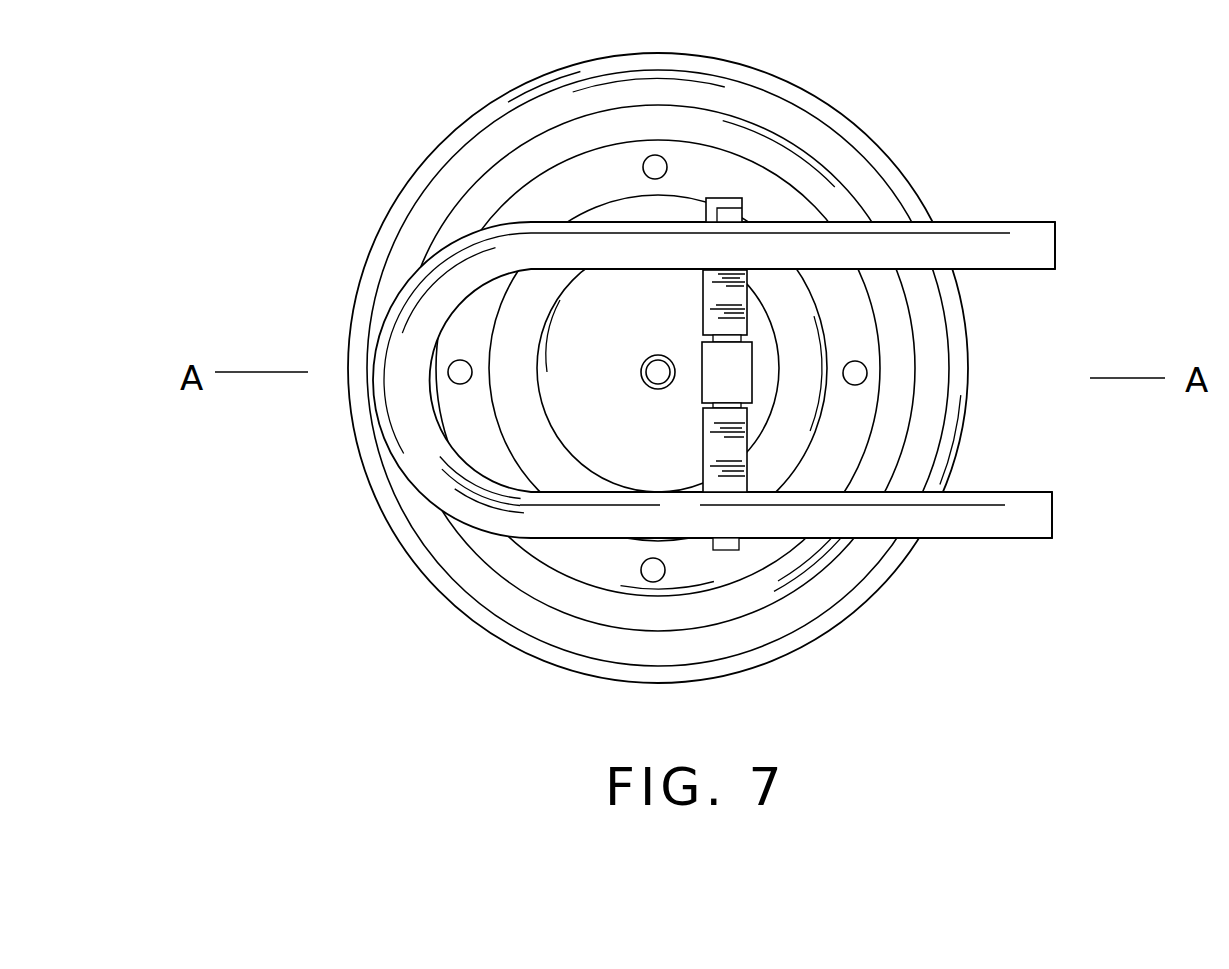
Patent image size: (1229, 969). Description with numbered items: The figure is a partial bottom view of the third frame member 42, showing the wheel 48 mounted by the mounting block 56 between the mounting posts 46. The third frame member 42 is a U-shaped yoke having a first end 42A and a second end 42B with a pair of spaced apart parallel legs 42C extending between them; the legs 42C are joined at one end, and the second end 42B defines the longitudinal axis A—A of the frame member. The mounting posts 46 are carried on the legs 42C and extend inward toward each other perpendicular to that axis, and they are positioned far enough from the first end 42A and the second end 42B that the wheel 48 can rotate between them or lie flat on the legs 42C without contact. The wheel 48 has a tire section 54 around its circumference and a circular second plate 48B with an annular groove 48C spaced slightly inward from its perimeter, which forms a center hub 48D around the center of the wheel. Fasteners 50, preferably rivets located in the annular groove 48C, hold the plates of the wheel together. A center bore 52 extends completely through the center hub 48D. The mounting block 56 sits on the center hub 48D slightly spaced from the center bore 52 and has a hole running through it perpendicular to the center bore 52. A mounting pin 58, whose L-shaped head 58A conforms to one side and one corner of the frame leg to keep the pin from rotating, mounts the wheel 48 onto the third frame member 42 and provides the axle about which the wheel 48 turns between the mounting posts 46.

The third frame member 42 is at (690, 527).
The first end 42A is at (1033, 530).
The second end 42B is at (400, 410).
The legs 42C is at (943, 528).
The mounting posts 46 is at (745, 298).
The wheel 48 is at (680, 97).
The second plate 48B is at (812, 605).
The annular groove 48C is at (567, 560).
The center hub 48D is at (660, 443).
The fasteners 50 is at (653, 584).
The center bore 52 is at (658, 366).
The tire section 54 is at (745, 63).
The mounting block 56 is at (745, 378).
The mounting pin 58 is at (740, 545).
The head 58A is at (742, 197).